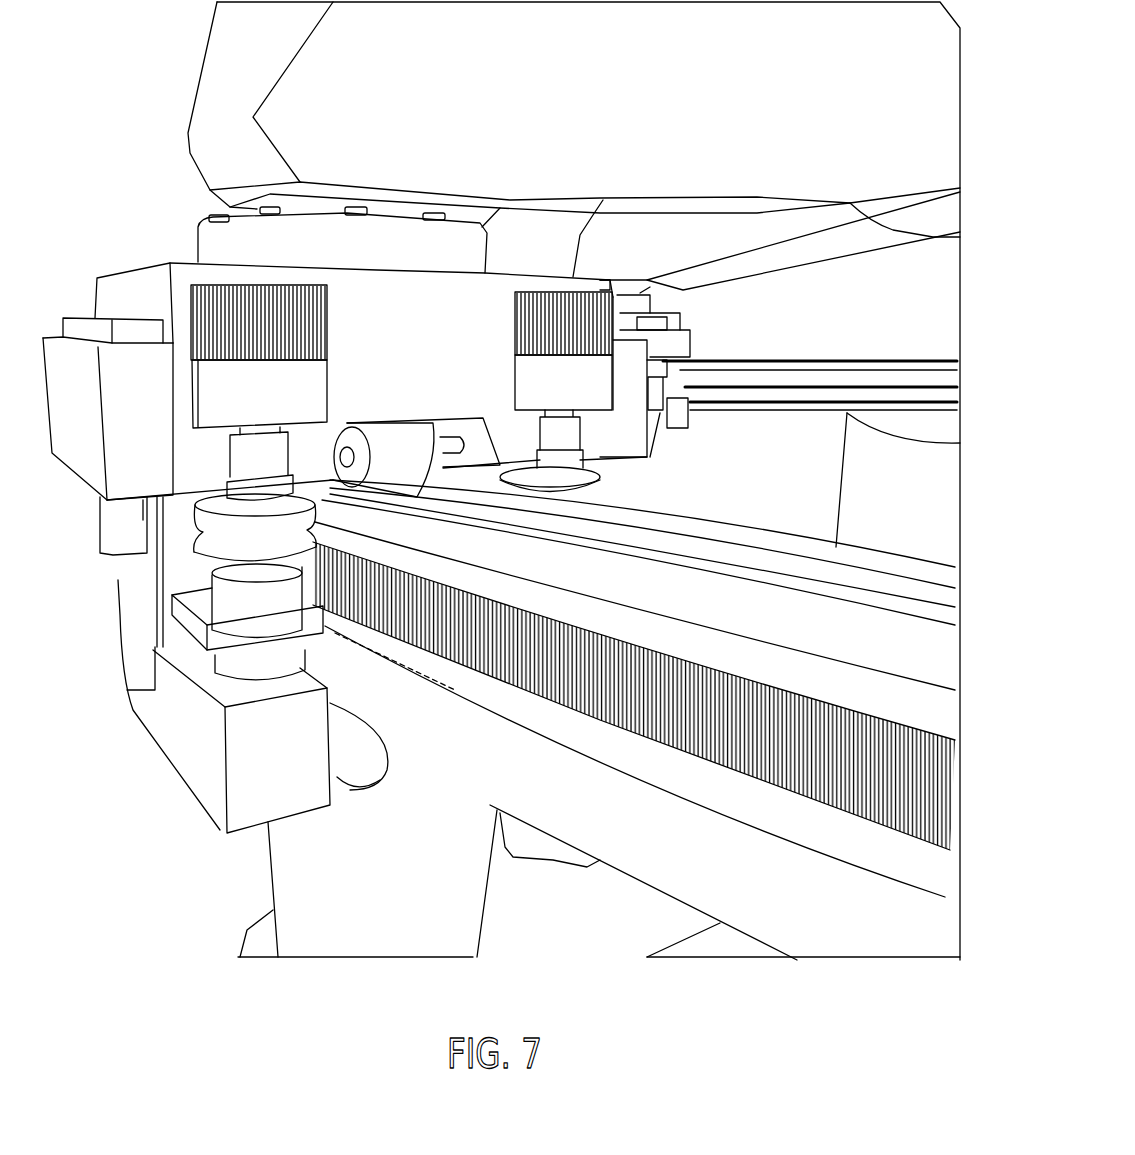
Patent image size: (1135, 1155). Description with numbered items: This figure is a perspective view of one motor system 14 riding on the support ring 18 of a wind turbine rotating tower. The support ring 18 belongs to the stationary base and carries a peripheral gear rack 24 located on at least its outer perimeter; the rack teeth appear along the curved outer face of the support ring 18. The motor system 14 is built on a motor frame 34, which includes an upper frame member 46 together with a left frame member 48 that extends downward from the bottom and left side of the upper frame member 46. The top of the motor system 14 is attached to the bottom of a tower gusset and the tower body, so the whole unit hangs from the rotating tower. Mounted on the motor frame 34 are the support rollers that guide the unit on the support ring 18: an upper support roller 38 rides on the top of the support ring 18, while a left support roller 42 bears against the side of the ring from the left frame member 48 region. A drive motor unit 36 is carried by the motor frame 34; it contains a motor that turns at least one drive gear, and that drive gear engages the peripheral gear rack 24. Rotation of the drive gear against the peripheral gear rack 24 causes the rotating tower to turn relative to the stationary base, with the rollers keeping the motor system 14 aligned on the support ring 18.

The motor system 14 is at (143, 226).
The support ring 18 is at (680, 523).
The peripheral gear rack 24 is at (708, 760).
The motor frame 34 is at (70, 295).
The drive motor unit 36 is at (118, 717).
The upper support roller 38 is at (395, 432).
The left support roller 42 is at (203, 553).
The upper frame member 46 is at (83, 463).
The left frame member 48 is at (197, 780).